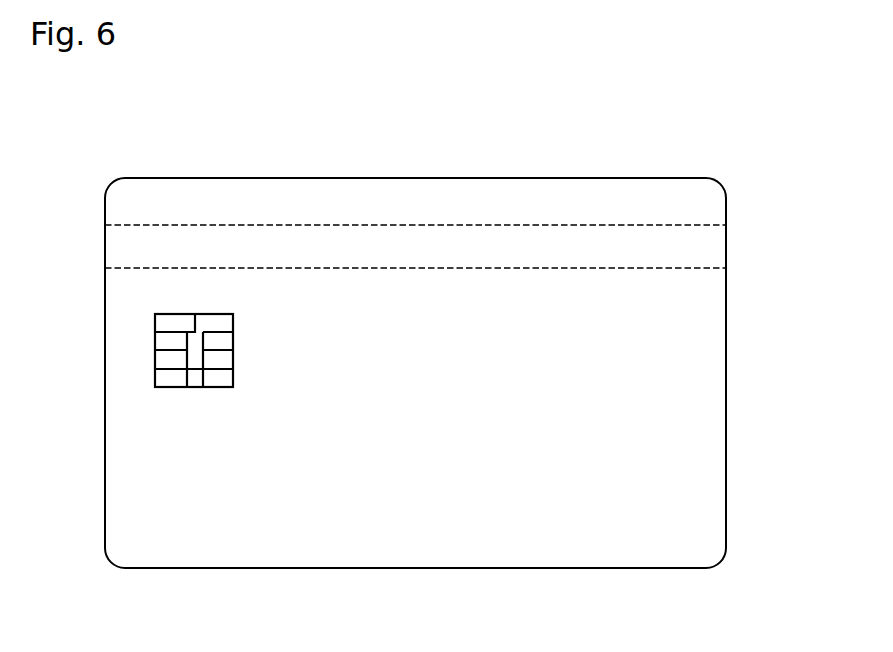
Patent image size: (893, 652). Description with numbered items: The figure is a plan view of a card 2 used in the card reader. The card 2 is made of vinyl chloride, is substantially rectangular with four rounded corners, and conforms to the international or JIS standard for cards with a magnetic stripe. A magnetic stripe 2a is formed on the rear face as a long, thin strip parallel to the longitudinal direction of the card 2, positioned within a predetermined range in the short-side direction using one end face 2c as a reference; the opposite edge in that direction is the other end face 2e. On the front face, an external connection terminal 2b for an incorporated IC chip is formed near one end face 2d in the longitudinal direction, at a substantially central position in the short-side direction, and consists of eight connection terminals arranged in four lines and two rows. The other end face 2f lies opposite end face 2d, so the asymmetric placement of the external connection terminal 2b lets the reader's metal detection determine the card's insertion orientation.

The card 2 is at (748, 145).
The magnetic stripe 2a is at (272, 225).
The external connection terminal 2b is at (233, 340).
The one end face 2c is at (430, 178).
The one end face 2d is at (105, 412).
The other end face 2e is at (396, 569).
The other end face 2f is at (726, 381).